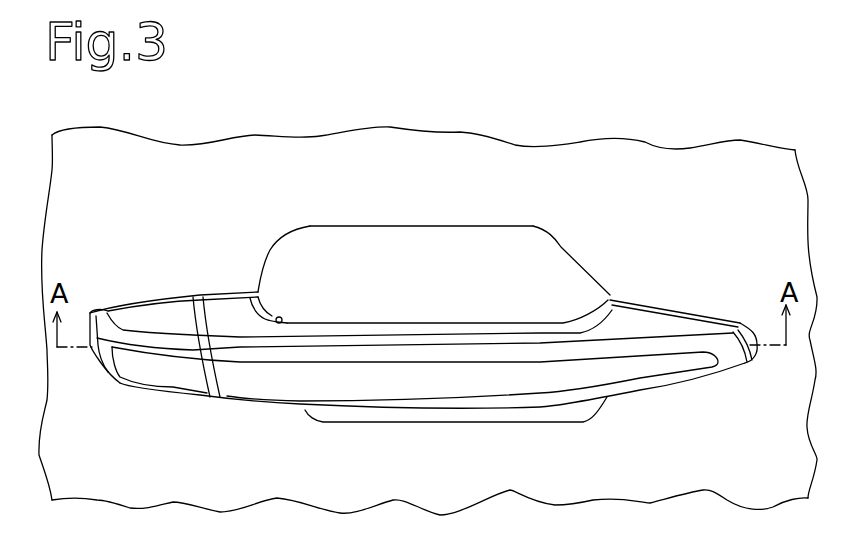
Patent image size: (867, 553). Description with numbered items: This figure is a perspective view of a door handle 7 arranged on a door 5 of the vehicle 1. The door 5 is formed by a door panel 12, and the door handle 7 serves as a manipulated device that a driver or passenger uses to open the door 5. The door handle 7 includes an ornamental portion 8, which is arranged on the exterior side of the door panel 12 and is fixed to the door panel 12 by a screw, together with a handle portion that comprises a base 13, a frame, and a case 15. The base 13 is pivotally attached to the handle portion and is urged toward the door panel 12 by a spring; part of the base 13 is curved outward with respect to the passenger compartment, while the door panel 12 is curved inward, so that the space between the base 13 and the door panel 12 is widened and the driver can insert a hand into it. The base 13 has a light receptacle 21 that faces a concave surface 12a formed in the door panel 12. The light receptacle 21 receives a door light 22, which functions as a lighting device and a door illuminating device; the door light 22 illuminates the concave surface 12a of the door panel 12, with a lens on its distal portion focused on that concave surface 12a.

The vehicle 1 is at (423, 263).
The door 5 is at (515, 144).
The door handle 7 is at (427, 410).
The ornamental portion 8 is at (167, 375).
The door panel 12 is at (434, 221).
The concave surface 12a is at (337, 226).
The base 13 is at (408, 325).
The case 15 is at (665, 370).
The light receptacle 21 is at (288, 320).
The door light 22 is at (279, 317).